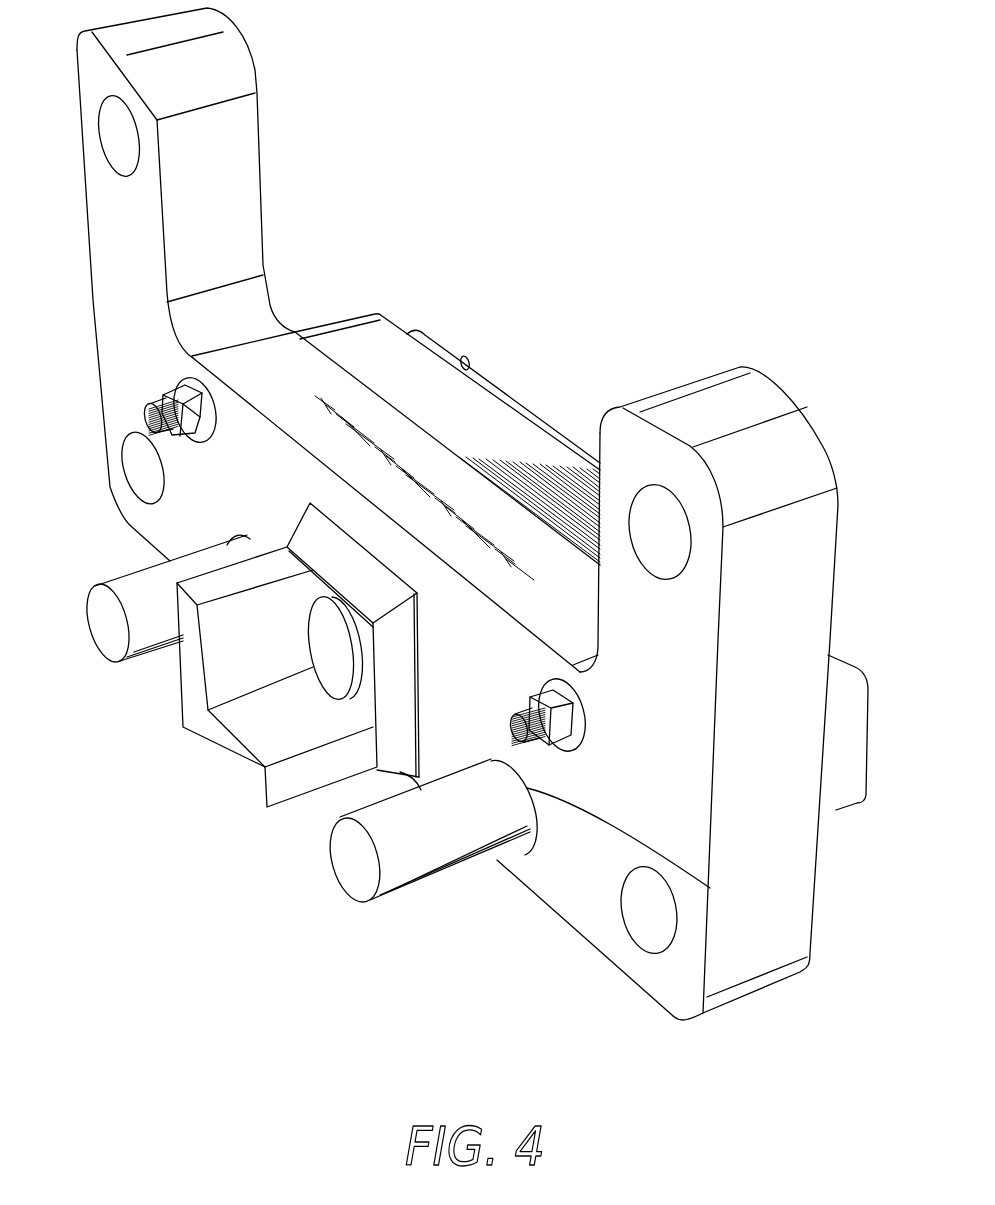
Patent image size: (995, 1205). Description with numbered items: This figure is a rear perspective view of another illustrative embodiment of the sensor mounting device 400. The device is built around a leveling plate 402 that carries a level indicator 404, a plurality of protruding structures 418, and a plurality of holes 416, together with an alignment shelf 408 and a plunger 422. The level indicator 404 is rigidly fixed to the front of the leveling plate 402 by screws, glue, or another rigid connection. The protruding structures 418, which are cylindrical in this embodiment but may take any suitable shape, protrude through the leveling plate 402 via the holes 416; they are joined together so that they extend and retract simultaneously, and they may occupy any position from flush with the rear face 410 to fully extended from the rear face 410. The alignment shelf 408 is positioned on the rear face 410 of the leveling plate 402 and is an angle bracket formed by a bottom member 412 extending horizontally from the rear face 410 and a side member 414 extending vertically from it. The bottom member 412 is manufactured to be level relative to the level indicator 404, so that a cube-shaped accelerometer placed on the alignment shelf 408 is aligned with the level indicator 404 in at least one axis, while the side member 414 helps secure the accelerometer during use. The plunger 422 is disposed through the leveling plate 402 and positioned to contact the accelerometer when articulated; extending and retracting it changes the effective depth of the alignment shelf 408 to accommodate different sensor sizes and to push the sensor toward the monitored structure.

The sensor mounting device 400 is at (449, 514).
The leveling plate 402 is at (781, 470).
The level indicator 404 is at (557, 432).
The alignment shelf 408 is at (193, 727).
The rear face 410 is at (673, 717).
The bottom member 412 is at (302, 730).
The side member 414 is at (223, 721).
The holes 416 is at (710, 888).
The protruding structures 418 is at (107, 637).
The plunger 422 is at (338, 655).